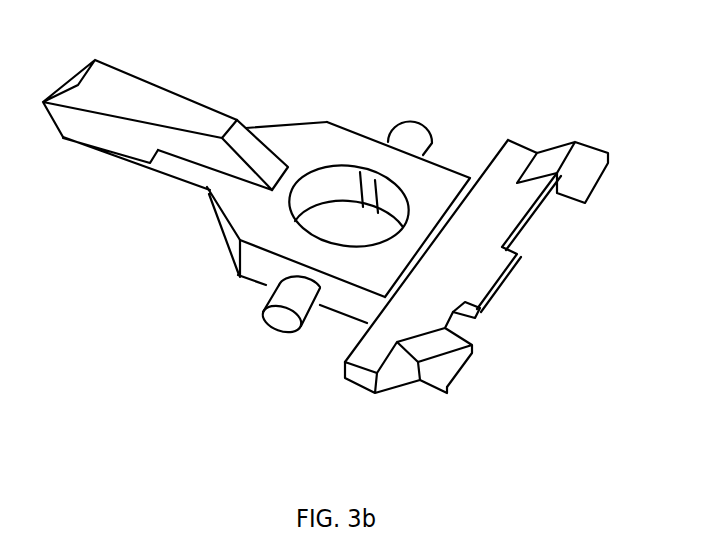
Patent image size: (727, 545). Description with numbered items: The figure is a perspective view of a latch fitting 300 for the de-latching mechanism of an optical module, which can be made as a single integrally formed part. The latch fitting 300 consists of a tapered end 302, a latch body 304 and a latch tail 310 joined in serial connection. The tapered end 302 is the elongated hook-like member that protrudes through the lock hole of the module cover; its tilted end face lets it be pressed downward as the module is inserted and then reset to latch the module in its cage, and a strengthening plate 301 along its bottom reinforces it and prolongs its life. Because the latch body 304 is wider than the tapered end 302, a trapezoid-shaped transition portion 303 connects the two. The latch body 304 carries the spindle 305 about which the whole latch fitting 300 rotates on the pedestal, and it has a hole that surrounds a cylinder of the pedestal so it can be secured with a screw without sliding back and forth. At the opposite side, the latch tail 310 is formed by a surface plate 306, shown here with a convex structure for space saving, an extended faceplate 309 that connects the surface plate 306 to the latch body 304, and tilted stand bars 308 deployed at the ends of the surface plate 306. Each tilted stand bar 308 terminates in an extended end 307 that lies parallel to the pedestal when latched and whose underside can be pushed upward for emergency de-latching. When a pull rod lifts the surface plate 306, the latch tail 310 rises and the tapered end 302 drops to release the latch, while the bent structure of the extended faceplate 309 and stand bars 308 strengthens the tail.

The latch fitting 300 is at (291, 386).
The strengthening plate 301 is at (110, 92).
The tapered end 302 is at (147, 165).
The transition portion 303 is at (285, 137).
The latch body 304 is at (345, 150).
The spindle 305 is at (285, 298).
The surface plate 306 is at (488, 249).
The extended end 307 is at (447, 344).
The tilted stand bar 308 is at (430, 353).
The extended faceplate 309 is at (418, 265).
The latch tail 310 is at (592, 302).